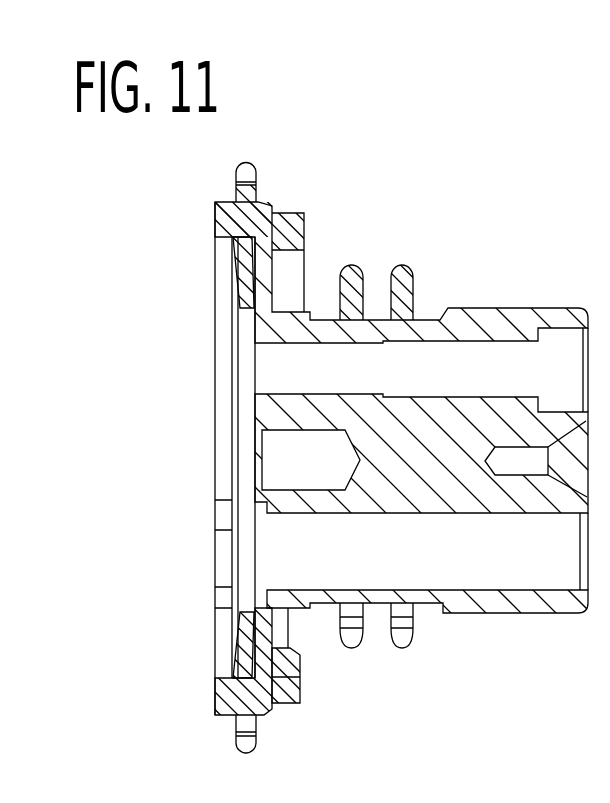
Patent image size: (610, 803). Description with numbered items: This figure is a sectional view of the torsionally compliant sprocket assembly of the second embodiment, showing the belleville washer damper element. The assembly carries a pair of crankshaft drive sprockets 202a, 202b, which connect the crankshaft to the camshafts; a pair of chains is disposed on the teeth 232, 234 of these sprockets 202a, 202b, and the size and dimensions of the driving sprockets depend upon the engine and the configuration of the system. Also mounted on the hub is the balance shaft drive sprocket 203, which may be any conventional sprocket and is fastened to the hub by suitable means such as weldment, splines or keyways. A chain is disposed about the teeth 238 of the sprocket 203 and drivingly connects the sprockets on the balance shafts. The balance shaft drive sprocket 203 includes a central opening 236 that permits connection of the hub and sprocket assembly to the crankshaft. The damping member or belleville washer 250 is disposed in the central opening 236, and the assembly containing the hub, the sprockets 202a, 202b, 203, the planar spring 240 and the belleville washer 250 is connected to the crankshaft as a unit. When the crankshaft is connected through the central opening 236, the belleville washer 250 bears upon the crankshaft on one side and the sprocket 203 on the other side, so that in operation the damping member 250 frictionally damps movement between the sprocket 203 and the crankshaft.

The teeth 238 is at (255, 165).
The planar spring 240 is at (304, 228).
The crankshaft drive sprocket 202b is at (368, 277).
The crankshaft drive sprocket 202a is at (417, 277).
The belleville washer 250 is at (240, 295).
The central opening 236 is at (187, 490).
The balance shaft drive sprocket 203 is at (212, 717).
The teeth 232 is at (358, 647).
The teeth 234 is at (408, 640).